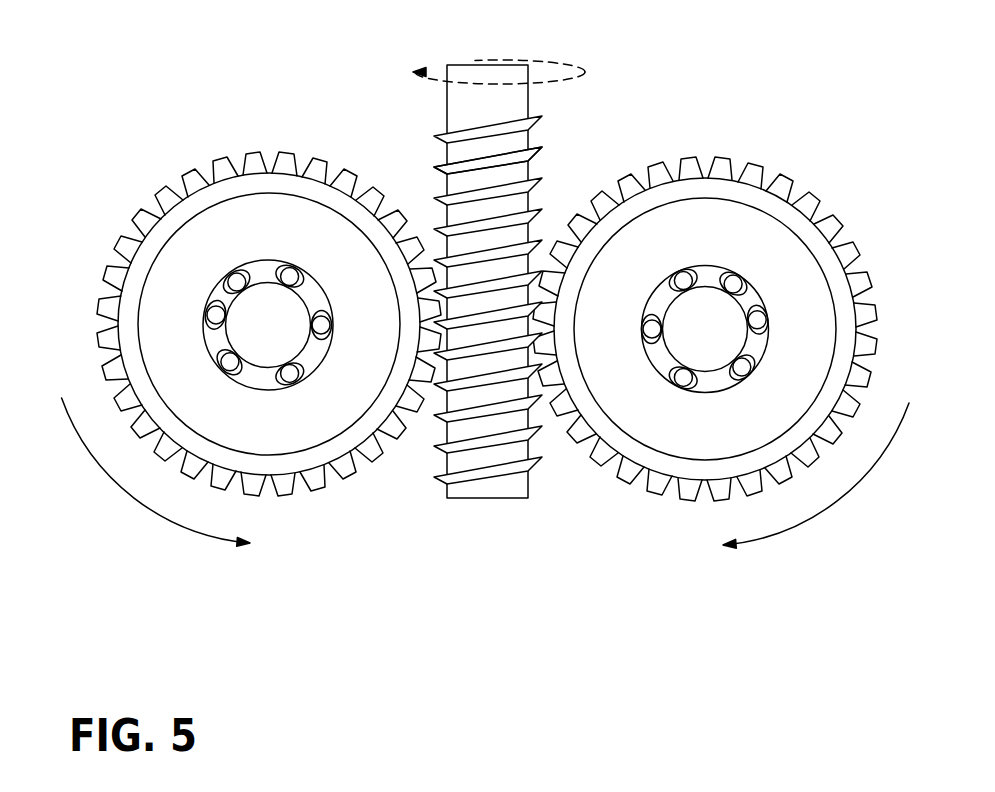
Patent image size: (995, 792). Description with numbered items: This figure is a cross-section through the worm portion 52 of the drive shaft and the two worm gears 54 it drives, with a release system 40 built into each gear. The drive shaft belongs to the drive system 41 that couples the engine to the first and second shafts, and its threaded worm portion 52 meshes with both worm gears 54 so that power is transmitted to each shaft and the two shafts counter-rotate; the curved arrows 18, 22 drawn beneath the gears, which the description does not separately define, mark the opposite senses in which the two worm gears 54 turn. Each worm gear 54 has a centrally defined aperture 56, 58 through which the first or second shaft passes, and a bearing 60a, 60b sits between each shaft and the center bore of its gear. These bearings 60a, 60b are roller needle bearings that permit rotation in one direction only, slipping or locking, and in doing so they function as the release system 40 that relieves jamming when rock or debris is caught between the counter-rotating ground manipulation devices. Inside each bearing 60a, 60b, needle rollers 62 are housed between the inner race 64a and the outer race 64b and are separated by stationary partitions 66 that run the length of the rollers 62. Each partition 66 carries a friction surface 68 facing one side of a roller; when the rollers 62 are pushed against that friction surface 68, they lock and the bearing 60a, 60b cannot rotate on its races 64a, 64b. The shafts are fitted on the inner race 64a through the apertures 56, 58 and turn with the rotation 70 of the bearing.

The rotation direction of first gear 18 is at (156, 480).
The rotation direction of second gear 22 is at (816, 487).
The release system 40 is at (443, 112).
The drive system 41 is at (433, 168).
The worm portion 52 is at (543, 173).
The worm gear 54 is at (218, 158).
The centrally defined aperture 56 is at (277, 334).
The centrally defined aperture 58 is at (719, 338).
The bearing 60a is at (220, 291).
The bearing 60b is at (773, 343).
The needle roller 62 is at (309, 385).
The inner race 64a is at (278, 383).
The outer race 64b is at (293, 372).
The stationary partition 66 is at (249, 383).
The friction surface 68 is at (265, 384).
The rotation of the bearing 70 is at (515, 69).